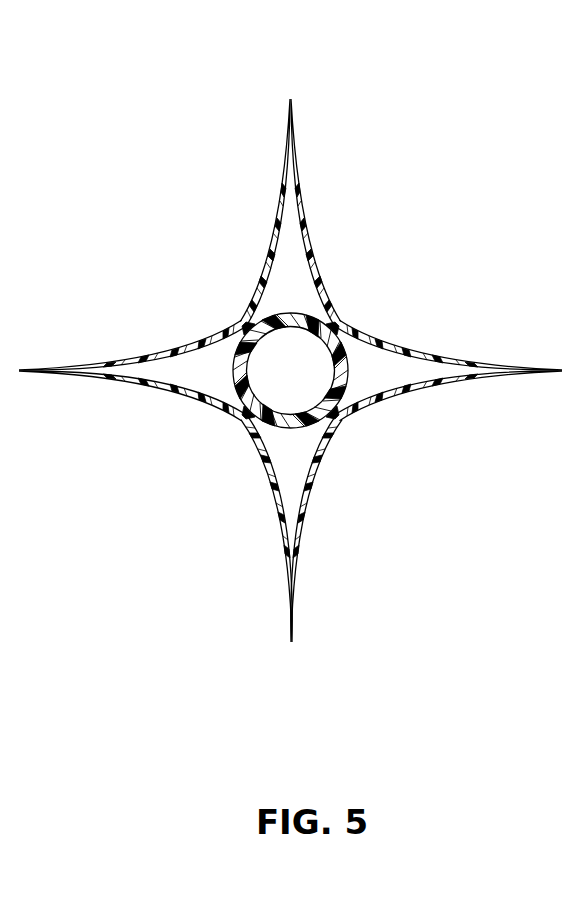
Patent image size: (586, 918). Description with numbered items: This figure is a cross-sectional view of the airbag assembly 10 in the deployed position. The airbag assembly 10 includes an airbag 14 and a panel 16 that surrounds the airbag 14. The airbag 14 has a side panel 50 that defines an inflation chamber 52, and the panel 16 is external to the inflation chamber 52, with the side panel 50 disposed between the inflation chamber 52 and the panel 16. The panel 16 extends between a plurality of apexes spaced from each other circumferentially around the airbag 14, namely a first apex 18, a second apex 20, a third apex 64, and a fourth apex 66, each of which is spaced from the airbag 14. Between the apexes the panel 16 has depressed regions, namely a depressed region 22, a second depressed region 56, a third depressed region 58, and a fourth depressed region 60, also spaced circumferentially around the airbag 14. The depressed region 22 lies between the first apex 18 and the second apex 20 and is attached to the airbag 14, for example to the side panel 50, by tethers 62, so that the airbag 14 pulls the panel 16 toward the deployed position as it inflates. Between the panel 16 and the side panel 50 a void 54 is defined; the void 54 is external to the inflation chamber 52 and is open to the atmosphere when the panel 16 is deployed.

The airbag assembly 10 is at (252, 188).
The airbag 14 is at (359, 372).
The panel 16 is at (99, 397).
The first apex 18 is at (18, 370).
The second apex 20 is at (291, 99).
The depressed region 22 is at (238, 320).
The side panel 50 is at (286, 320).
The inflation chamber 52 is at (291, 398).
The void 54 is at (209, 374).
The second depressed region 56 is at (343, 330).
The third depressed region 58 is at (345, 418).
The fourth depressed region 60 is at (238, 420).
The tethers 62 is at (216, 333).
The third apex 64 is at (563, 370).
The fourth apex 66 is at (291, 642).